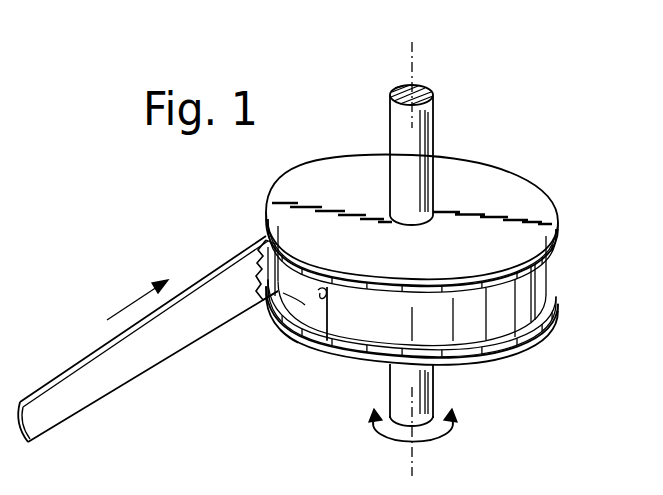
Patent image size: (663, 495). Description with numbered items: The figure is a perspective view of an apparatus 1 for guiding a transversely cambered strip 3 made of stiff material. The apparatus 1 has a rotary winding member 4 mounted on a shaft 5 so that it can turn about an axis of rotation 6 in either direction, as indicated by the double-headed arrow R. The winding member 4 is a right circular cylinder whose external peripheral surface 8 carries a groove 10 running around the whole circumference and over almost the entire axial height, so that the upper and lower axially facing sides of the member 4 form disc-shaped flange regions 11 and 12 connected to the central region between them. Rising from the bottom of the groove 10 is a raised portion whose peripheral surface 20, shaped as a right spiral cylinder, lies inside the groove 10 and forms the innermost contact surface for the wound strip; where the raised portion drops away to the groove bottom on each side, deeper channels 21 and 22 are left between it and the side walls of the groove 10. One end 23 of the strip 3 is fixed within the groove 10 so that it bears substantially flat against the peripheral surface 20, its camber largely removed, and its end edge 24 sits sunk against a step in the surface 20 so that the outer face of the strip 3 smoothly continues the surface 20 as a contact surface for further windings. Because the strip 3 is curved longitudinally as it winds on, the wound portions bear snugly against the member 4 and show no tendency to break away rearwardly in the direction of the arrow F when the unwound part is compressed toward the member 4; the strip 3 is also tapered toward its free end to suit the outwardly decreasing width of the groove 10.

The apparatus 1 is at (507, 154).
The strip 3 is at (114, 376).
The winding member 4 is at (531, 207).
The shaft 5 is at (431, 128).
The axis of rotation 6 is at (416, 55).
The external peripheral surface 8 is at (509, 344).
The groove 10 is at (543, 292).
The upper flange region 11 is at (556, 235).
The lower flange region 12 is at (556, 316).
The peripheral surface 20 is at (295, 292).
The channel 21 is at (264, 240).
The channel 22 is at (286, 339).
The end of the strip 23 is at (352, 318).
The end edge 24 is at (326, 290).
The arrow F is at (109, 287).
The double-headed arrow R is at (394, 441).